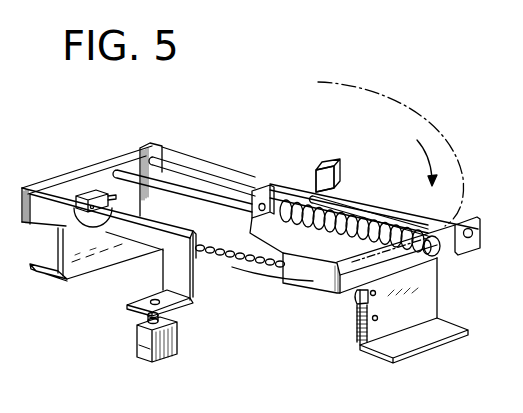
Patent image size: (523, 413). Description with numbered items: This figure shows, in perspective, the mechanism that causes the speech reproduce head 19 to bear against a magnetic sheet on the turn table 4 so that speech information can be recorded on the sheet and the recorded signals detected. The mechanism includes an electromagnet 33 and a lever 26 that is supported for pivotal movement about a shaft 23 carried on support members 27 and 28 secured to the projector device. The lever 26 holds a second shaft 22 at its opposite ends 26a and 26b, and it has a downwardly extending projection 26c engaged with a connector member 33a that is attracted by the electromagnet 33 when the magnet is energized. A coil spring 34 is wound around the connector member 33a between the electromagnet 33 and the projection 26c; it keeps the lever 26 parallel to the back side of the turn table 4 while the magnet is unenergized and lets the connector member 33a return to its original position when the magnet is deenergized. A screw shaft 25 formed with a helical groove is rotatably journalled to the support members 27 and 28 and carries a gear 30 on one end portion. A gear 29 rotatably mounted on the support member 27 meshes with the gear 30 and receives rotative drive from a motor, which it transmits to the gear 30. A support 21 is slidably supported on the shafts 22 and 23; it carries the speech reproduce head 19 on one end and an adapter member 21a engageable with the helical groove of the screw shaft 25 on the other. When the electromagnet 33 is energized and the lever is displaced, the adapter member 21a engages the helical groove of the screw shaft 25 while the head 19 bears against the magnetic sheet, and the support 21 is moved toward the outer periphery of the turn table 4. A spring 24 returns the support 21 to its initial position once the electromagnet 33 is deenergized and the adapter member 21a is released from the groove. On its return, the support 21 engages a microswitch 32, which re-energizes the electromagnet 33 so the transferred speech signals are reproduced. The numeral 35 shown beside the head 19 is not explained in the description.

The turn table 4 is at (443, 155).
The speech reproduce head 19 is at (336, 168).
The stopper block 35 is at (355, 155).
The support 21 is at (288, 190).
The adapter member 21a is at (250, 233).
The shaft 22 is at (249, 180).
The shaft 23 is at (203, 190).
The spring 24 is at (356, 214).
The screw shaft 25 is at (222, 258).
The lever 26 is at (320, 284).
The end of lever 26a is at (447, 250).
The end of lever 26b is at (143, 157).
The downwardly extending projection 26c is at (182, 306).
The support member 27 is at (400, 346).
The support member 28 is at (72, 270).
The gear 29 is at (360, 324).
The gear 30 is at (360, 300).
The microswitch 32 is at (98, 206).
The electromagnet 33 is at (168, 356).
The connector member 33a is at (142, 313).
The coil spring 34 is at (140, 350).